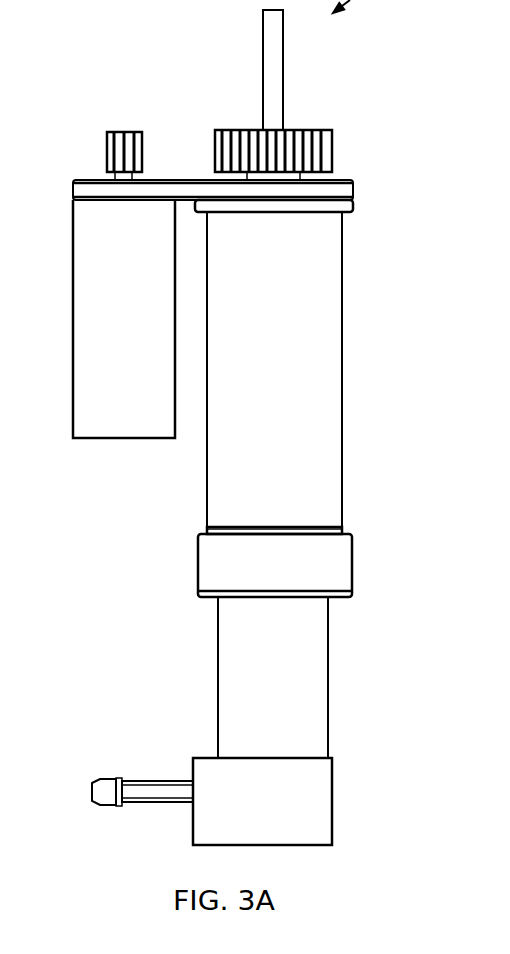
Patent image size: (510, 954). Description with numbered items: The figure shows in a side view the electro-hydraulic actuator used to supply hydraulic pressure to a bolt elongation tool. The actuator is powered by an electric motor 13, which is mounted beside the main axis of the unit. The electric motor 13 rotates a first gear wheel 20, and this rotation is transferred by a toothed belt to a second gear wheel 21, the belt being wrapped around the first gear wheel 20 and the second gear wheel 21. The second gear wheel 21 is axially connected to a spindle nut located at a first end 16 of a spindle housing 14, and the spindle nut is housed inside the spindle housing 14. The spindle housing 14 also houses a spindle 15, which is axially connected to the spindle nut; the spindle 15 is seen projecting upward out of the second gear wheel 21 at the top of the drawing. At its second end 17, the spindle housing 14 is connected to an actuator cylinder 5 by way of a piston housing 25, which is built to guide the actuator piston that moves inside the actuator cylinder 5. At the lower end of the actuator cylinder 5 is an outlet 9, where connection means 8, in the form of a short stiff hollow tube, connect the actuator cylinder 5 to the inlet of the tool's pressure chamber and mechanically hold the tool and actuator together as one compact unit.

The actuator cylinder 5 is at (305, 708).
The connection means 8 is at (94, 785).
The outlet 9 is at (184, 765).
The electric motor 13 is at (112, 300).
The spindle housing 14 is at (318, 487).
The spindle 15 is at (272, 62).
The first end 16 is at (202, 168).
The second end 17 is at (194, 521).
The first gear wheel 20 is at (123, 143).
The second gear wheel 21 is at (313, 155).
The piston housing 25 is at (323, 568).